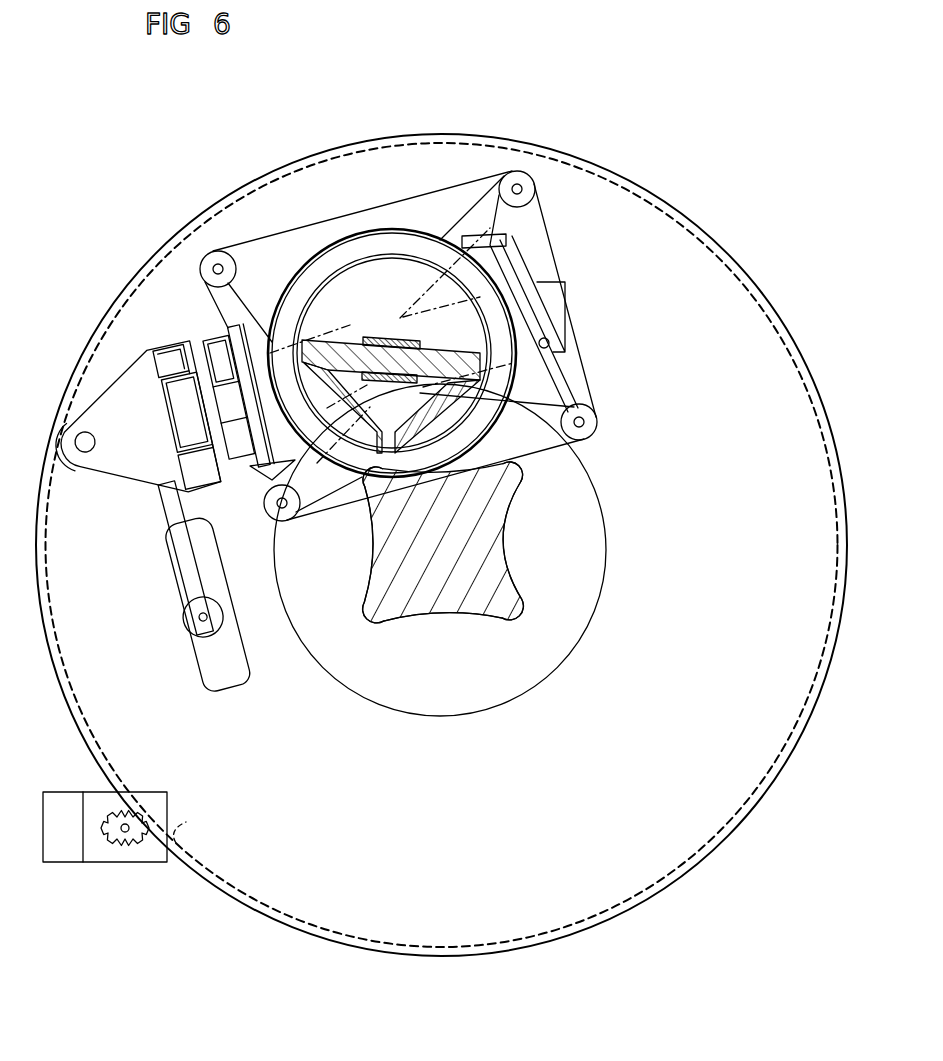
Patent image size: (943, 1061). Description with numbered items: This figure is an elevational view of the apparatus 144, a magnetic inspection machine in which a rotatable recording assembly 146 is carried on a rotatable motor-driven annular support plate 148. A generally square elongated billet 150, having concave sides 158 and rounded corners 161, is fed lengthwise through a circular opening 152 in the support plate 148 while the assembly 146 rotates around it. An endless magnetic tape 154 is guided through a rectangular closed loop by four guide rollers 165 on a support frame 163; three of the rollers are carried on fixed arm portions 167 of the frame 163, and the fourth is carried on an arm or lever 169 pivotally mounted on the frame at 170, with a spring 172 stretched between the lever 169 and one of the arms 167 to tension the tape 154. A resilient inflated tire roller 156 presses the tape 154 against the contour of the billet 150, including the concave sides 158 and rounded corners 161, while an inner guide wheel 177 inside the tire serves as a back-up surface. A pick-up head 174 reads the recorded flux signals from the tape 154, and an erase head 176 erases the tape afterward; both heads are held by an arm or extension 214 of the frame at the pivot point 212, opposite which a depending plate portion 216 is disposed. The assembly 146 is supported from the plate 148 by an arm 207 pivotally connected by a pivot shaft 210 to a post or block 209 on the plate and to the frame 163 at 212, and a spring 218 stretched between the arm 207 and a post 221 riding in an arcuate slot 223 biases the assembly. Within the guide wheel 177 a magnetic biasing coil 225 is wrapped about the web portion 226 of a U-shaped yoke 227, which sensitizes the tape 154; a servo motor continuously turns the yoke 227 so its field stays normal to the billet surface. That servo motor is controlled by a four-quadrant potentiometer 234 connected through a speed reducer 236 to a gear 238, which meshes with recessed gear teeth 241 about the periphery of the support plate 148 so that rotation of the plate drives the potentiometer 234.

The apparatus 144 is at (178, 186).
The rotatable recording assembly 146 is at (630, 372).
The rotatable motor-driven annular support plate 148 is at (716, 243).
The billet 150 is at (497, 578).
The circular opening 152 is at (552, 656).
The tape 154 is at (553, 250).
The tire roller 156 is at (306, 265).
The concave sides 158 is at (368, 568).
The rounded corners 161 is at (518, 470).
The support frame 163 is at (272, 472).
The guide rollers 165 is at (536, 190).
The fixed arm portions 167 is at (503, 183).
The arm or lever 169 is at (535, 323).
The pivot 170 is at (550, 344).
The spring 172 is at (490, 235).
The pick-up head 174 is at (215, 357).
The erase head 176 is at (240, 458).
The inner guide wheel 177 is at (343, 270).
The arm 207 is at (88, 462).
The post or block 209 is at (62, 458).
The pivot shaft 210 is at (122, 440).
The pivot point 212 is at (176, 360).
The arm or extension 214 is at (200, 405).
The depending plate portion 216 is at (262, 468).
The spring 218 is at (180, 558).
The post 221 is at (185, 622).
The arcuate slot 223 is at (203, 668).
The magnetic biasing coil 225 is at (378, 381).
The web portion 226 is at (363, 342).
The yoke 227 is at (440, 360).
The four-quadrant potentiometer 234 is at (70, 852).
The speed reducer 236 is at (105, 852).
The gear 238 is at (136, 844).
The recessed gear teeth 241 is at (204, 825).